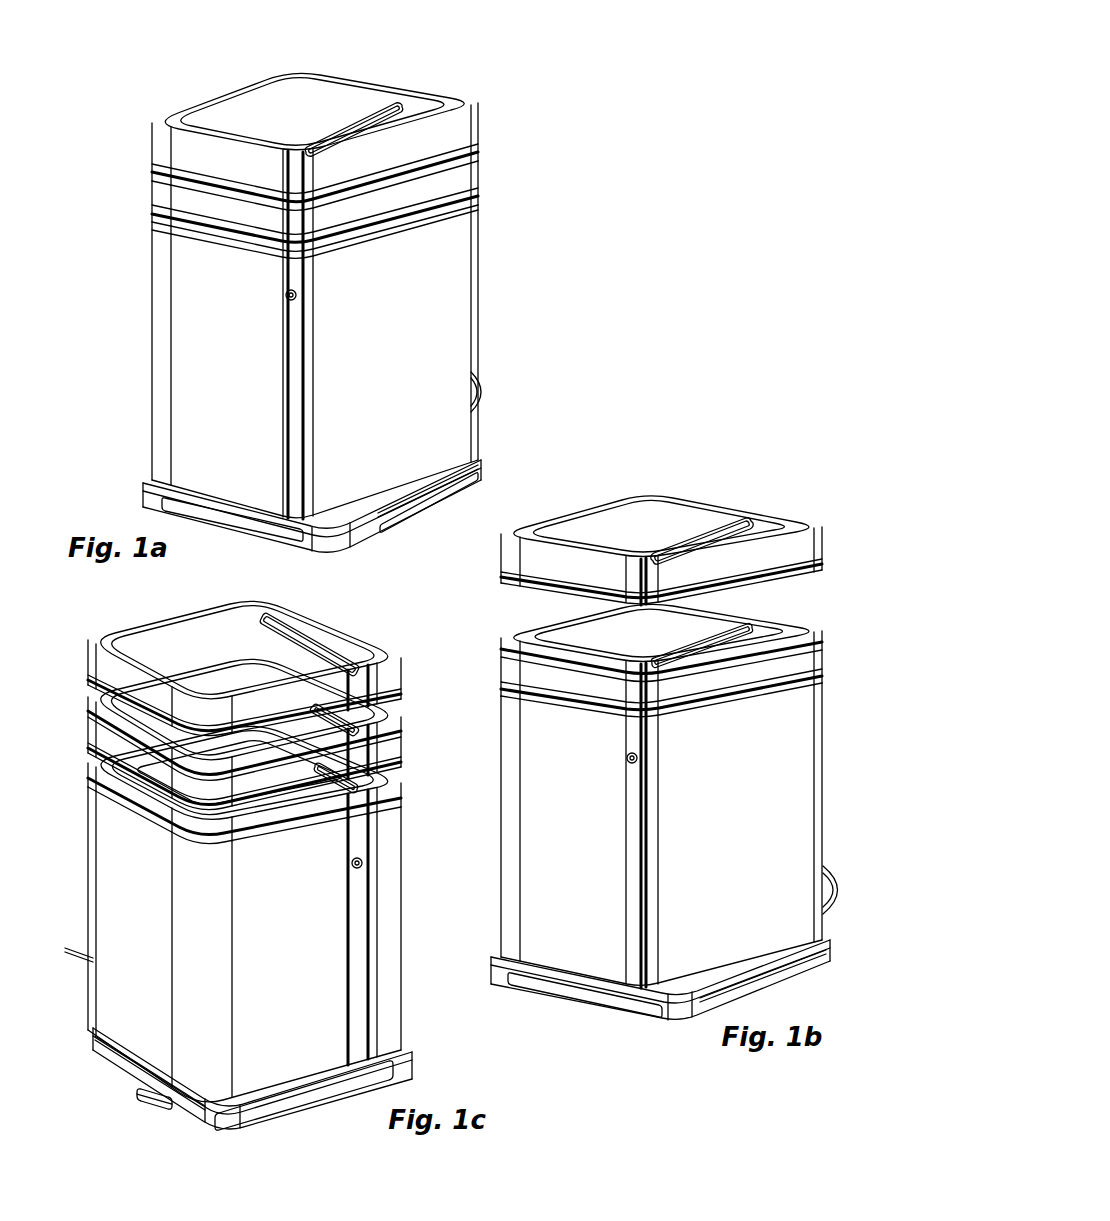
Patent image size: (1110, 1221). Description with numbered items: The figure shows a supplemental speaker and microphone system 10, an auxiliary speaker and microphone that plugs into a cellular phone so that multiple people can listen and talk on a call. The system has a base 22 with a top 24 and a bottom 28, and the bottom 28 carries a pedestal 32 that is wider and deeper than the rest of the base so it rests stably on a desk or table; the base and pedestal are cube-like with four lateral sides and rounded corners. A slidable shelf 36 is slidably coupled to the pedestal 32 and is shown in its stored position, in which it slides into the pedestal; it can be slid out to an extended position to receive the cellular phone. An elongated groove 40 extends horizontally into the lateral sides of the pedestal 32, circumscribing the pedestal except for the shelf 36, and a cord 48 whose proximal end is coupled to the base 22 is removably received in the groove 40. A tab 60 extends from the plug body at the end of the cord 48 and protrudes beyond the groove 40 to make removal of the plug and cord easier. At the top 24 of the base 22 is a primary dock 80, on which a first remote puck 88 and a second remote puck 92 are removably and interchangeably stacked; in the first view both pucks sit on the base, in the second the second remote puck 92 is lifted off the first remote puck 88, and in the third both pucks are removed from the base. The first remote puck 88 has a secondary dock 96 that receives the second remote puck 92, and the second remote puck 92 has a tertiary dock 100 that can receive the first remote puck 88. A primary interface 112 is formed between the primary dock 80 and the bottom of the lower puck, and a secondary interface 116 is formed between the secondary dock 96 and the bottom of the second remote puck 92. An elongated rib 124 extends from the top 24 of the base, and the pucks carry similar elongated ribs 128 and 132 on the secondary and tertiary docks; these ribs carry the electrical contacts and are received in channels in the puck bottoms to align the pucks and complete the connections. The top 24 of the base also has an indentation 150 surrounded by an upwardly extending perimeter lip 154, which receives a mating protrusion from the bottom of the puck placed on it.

In FIG. 1A, the supplemental speaker and microphone system 10 is at (345, 322).
In FIG. 1B, the supplemental speaker and microphone system 10 is at (663, 770).
In FIG. 1C, the supplemental speaker and microphone system 10 is at (281, 866).
In FIG. 1A, the base 22 is at (172, 300).
In FIG. 1B, the base 22 is at (803, 752).
In FIG. 1C, the base 22 is at (104, 850).
In FIG. 1A, the top 24 is at (150, 230).
In FIG. 1A, the bottom 28 is at (172, 470).
In FIG. 1A, the pedestal 32 is at (148, 486).
In FIG. 1A, the slidable shelf 36 is at (256, 532).
In FIG. 1A, the elongated groove 40 is at (400, 530).
In FIG. 1C, the elongated groove 40 is at (100, 1058).
In FIG. 1A, the cord 48 is at (462, 497).
In FIG. 1C, the cord 48 is at (128, 1078).
In FIG. 1C, the tab 60 is at (150, 1110).
In FIG. 1C, the primary dock 80 is at (130, 783).
In FIG. 1A, the first remote puck 88 is at (484, 160).
In FIG. 1B, the first remote puck 88 is at (508, 660).
In FIG. 1C, the first remote puck 88 is at (88, 725).
In FIG. 1A, the second remote puck 92 is at (482, 114).
In FIG. 1B, the second remote puck 92 is at (790, 515).
In FIG. 1C, the second remote puck 92 is at (88, 655).
In FIG. 1B, the secondary dock 96 is at (568, 632).
In FIG. 1C, the secondary dock 96 is at (372, 720).
In FIG. 1B, the tertiary dock 100 is at (607, 522).
In FIG. 1C, the tertiary dock 100 is at (306, 614).
In FIG. 1A, the primary interface 112 is at (150, 213).
In FIG. 1A, the secondary interface 116 is at (152, 165).
In FIG. 1C, the elongated rib 124 is at (395, 790).
In FIG. 1B, the elongated rib 128 is at (704, 648).
In FIG. 1B, the elongated rib 132 is at (698, 548).
In FIG. 1C, the indentation 150 is at (290, 842).
In FIG. 1C, the perimeter lip 154 is at (254, 857).